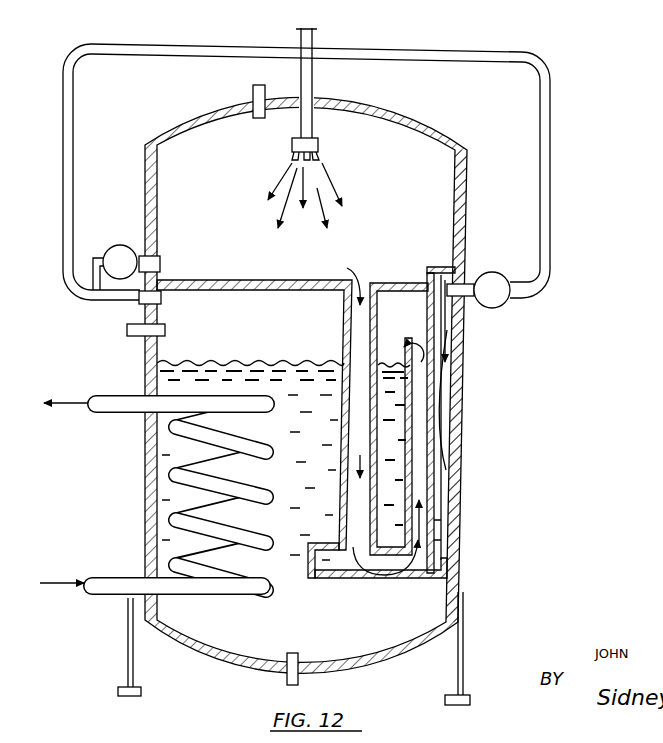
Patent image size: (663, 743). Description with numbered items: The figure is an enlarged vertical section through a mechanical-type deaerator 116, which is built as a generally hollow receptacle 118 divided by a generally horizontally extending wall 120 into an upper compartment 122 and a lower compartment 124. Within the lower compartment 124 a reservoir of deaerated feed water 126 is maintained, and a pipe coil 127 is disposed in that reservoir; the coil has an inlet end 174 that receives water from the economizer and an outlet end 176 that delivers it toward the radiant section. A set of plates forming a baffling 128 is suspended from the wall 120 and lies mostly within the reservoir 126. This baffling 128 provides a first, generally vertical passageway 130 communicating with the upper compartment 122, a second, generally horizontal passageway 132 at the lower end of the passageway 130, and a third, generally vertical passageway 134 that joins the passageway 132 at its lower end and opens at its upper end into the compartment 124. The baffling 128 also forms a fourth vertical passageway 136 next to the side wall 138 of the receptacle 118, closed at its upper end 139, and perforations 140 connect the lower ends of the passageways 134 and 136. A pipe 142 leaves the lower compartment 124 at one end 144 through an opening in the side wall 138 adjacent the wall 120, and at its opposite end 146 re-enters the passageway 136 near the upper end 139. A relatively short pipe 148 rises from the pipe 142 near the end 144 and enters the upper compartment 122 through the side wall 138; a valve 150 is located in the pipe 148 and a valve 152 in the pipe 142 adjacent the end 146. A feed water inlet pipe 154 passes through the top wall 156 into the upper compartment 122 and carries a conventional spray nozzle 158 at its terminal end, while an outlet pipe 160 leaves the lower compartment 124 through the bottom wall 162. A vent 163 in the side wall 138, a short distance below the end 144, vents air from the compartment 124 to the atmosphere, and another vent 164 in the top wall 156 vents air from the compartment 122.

The deaerator 116 is at (560, 130).
The receptacle 118 is at (470, 452).
The horizontally extending wall 120 is at (244, 280).
The upper compartment 122 is at (336, 191).
The lower compartment 124 is at (249, 441).
The reservoir of deaerated feed water 126 is at (198, 378).
The pipe coil 127 is at (190, 481).
The baffling 128 is at (335, 478).
The first passageway 130 is at (360, 333).
The second passageway 132 is at (352, 571).
The third passageway 134 is at (399, 419).
The fourth passageway 136 is at (445, 402).
The side wall 138 is at (446, 492).
The upper end of fourth passageway 139 is at (442, 267).
The perforations 140 is at (432, 540).
The pipe 142 is at (428, 52).
The end of pipe 144 is at (140, 298).
The opposite end of pipe 146 is at (472, 284).
The short pipe 148 is at (88, 262).
The valve 150 is at (105, 252).
The valve 152 is at (500, 306).
The feed water inlet pipe 154 is at (314, 30).
The top wall 156 is at (332, 100).
The spray nozzle 158 is at (318, 146).
The outlet pipe 160 is at (286, 672).
The bottom wall 162 is at (368, 661).
The vent 163 is at (160, 328).
The vent 164 is at (258, 86).
The inlet end of pipe coil 174 is at (130, 592).
The outlet end of pipe coil 176 is at (134, 394).